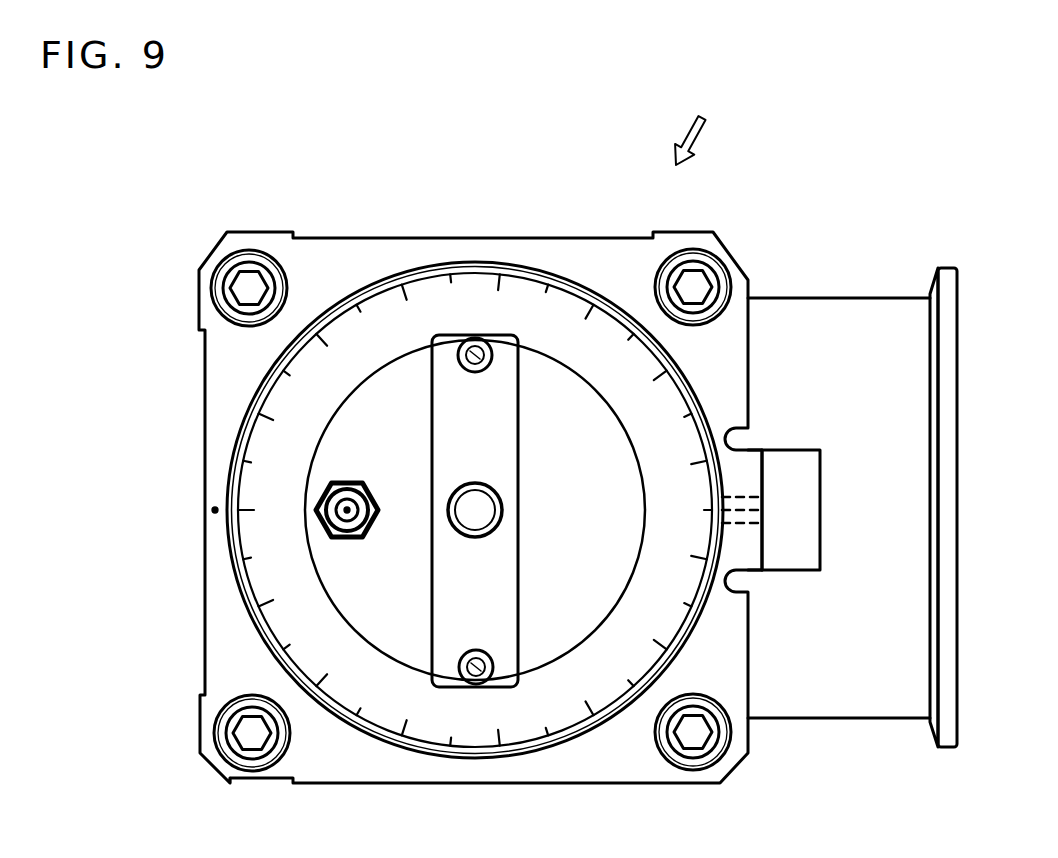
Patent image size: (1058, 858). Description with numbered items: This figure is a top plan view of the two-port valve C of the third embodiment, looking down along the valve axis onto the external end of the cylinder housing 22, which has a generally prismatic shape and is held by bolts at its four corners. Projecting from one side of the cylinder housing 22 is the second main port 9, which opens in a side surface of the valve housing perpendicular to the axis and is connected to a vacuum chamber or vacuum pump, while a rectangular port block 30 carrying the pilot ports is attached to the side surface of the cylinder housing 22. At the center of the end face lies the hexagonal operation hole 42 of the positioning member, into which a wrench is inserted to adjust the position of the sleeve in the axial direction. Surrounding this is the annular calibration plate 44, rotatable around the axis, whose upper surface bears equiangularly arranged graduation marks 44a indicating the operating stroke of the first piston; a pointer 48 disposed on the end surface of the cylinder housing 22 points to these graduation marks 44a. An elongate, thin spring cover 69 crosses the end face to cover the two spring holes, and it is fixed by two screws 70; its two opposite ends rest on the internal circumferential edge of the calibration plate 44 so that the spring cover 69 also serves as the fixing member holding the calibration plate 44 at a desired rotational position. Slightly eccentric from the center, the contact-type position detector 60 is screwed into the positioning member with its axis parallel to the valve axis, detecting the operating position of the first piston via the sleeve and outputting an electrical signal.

The second main port 9 is at (878, 330).
The cylinder housing 22 is at (223, 374).
The port block 30 is at (802, 533).
The operation hole 42 is at (503, 507).
The calibration plate 44 is at (240, 588).
The graduation marks 44a is at (343, 718).
The pointer 48 is at (215, 510).
The position detector 60 is at (316, 507).
The spring cover 69 is at (500, 403).
The screws 70 is at (474, 338).
The two-port valve C is at (696, 118).